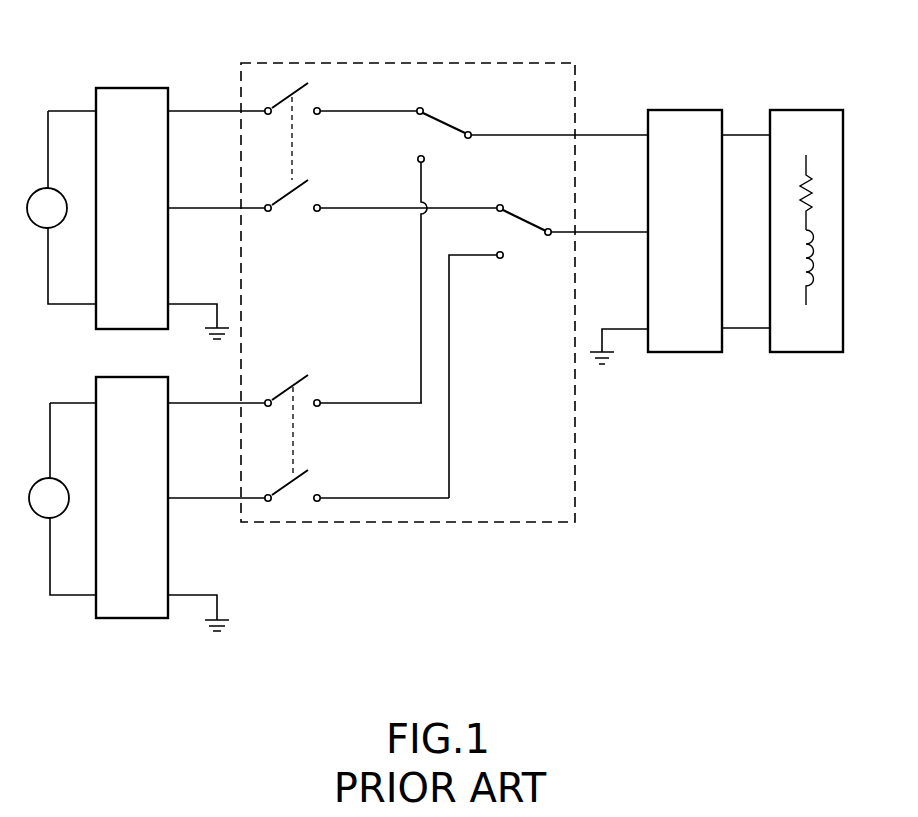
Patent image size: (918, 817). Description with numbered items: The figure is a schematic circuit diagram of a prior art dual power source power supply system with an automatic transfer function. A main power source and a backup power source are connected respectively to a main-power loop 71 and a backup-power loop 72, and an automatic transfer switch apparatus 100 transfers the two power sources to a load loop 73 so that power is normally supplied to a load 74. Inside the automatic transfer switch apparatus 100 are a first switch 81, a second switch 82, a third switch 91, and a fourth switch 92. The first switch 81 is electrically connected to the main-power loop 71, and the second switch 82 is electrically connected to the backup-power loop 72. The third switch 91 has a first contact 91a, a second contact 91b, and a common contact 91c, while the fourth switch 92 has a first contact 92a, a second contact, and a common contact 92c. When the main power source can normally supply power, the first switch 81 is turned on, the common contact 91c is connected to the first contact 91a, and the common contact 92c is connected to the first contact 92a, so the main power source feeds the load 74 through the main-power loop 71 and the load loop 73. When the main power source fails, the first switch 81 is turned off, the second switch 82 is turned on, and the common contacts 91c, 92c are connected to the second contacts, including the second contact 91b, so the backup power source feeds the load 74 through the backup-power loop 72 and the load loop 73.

The main-power loop 71 is at (131, 88).
The backup-power loop 72 is at (134, 620).
The load loop 73 is at (686, 115).
The load 74 is at (806, 115).
The first switch 81 is at (283, 88).
The second switch 82 is at (287, 378).
The third switch 91 is at (451, 118).
The first contact 91a is at (418, 107).
The second contact 91b is at (418, 159).
The common contact 91c is at (470, 128).
The fourth switch 92 is at (522, 212).
The first contact 92a is at (497, 203).
The common contact 92c is at (552, 226).
The automatic transfer switch apparatus 100 is at (528, 62).